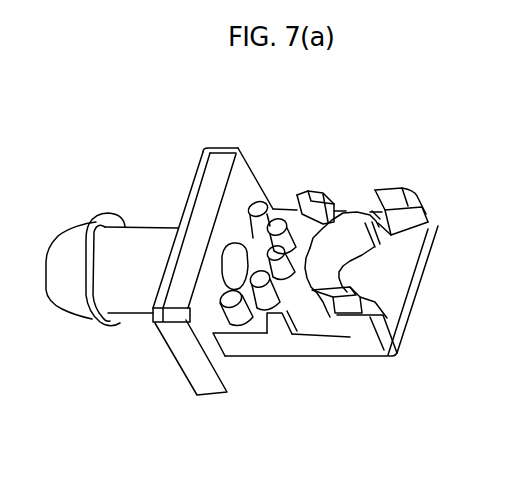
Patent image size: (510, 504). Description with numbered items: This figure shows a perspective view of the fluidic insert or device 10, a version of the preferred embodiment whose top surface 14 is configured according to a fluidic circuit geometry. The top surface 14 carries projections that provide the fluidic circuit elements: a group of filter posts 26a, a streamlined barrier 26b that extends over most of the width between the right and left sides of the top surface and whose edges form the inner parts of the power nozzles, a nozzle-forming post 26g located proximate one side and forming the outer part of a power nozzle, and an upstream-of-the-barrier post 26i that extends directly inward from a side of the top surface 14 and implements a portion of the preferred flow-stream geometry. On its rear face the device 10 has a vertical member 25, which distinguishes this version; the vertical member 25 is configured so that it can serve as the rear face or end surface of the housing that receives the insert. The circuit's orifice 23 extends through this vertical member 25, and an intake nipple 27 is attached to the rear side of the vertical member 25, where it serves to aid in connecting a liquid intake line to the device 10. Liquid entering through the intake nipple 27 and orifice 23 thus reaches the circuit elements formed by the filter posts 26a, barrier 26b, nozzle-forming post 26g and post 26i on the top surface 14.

The fluidic insert 10 is at (102, 136).
The top surface 14 is at (410, 248).
The orifice 23 is at (227, 275).
The vertical member 25 is at (203, 379).
The filter posts 26a is at (234, 243).
The streamlined barrier 26b is at (335, 233).
The nozzle-forming post 26g is at (355, 315).
The upstream-of-the-barrier post 26i is at (287, 335).
The intake nipple 27 is at (88, 303).